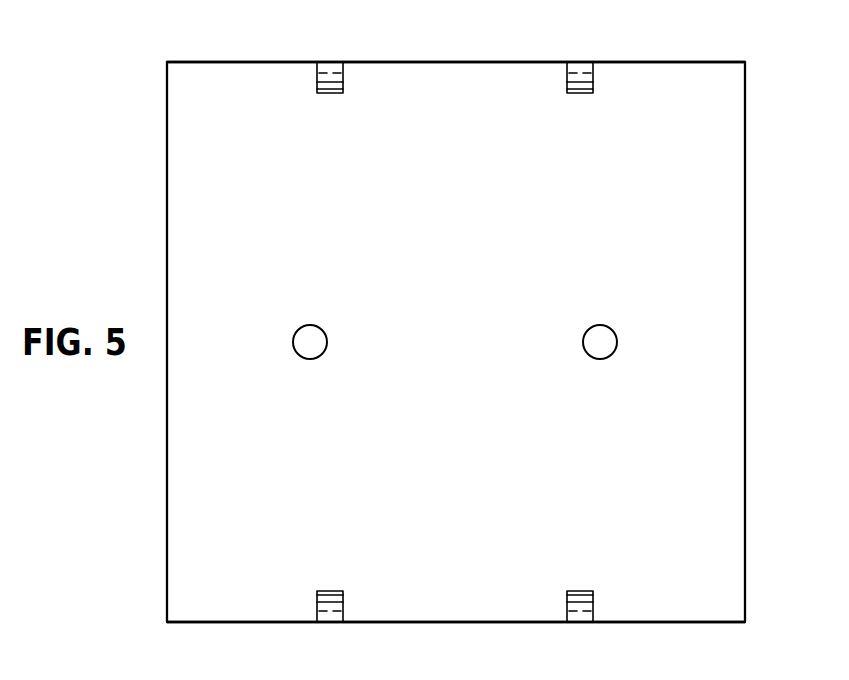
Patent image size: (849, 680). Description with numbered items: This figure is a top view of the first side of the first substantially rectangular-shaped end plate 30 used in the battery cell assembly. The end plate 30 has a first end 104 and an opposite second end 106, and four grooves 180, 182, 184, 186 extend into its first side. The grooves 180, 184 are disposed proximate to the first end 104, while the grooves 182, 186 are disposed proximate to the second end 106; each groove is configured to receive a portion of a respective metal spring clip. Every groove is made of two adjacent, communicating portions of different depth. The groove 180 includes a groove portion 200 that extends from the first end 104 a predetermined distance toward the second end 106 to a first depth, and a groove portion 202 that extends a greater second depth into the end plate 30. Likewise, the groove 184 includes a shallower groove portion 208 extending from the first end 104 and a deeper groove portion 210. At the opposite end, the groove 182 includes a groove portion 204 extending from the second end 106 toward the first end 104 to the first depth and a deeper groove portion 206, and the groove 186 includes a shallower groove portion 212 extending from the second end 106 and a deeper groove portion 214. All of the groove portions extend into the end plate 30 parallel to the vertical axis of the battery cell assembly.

The first substantially rectangular-shaped end plate 30 is at (760, 213).
The first end 104 is at (220, 62).
The second end 106 is at (220, 622).
The groove 180 is at (338, 70).
The groove 182 is at (338, 615).
The groove 184 is at (584, 70).
The groove 186 is at (584, 615).
The groove portion 200 is at (323, 68).
The groove portion 202 is at (316, 83).
The groove portion 204 is at (322, 617).
The groove portion 206 is at (324, 602).
The groove portion 208 is at (573, 68).
The groove portion 210 is at (566, 83).
The groove portion 212 is at (566, 617).
The groove portion 214 is at (574, 602).